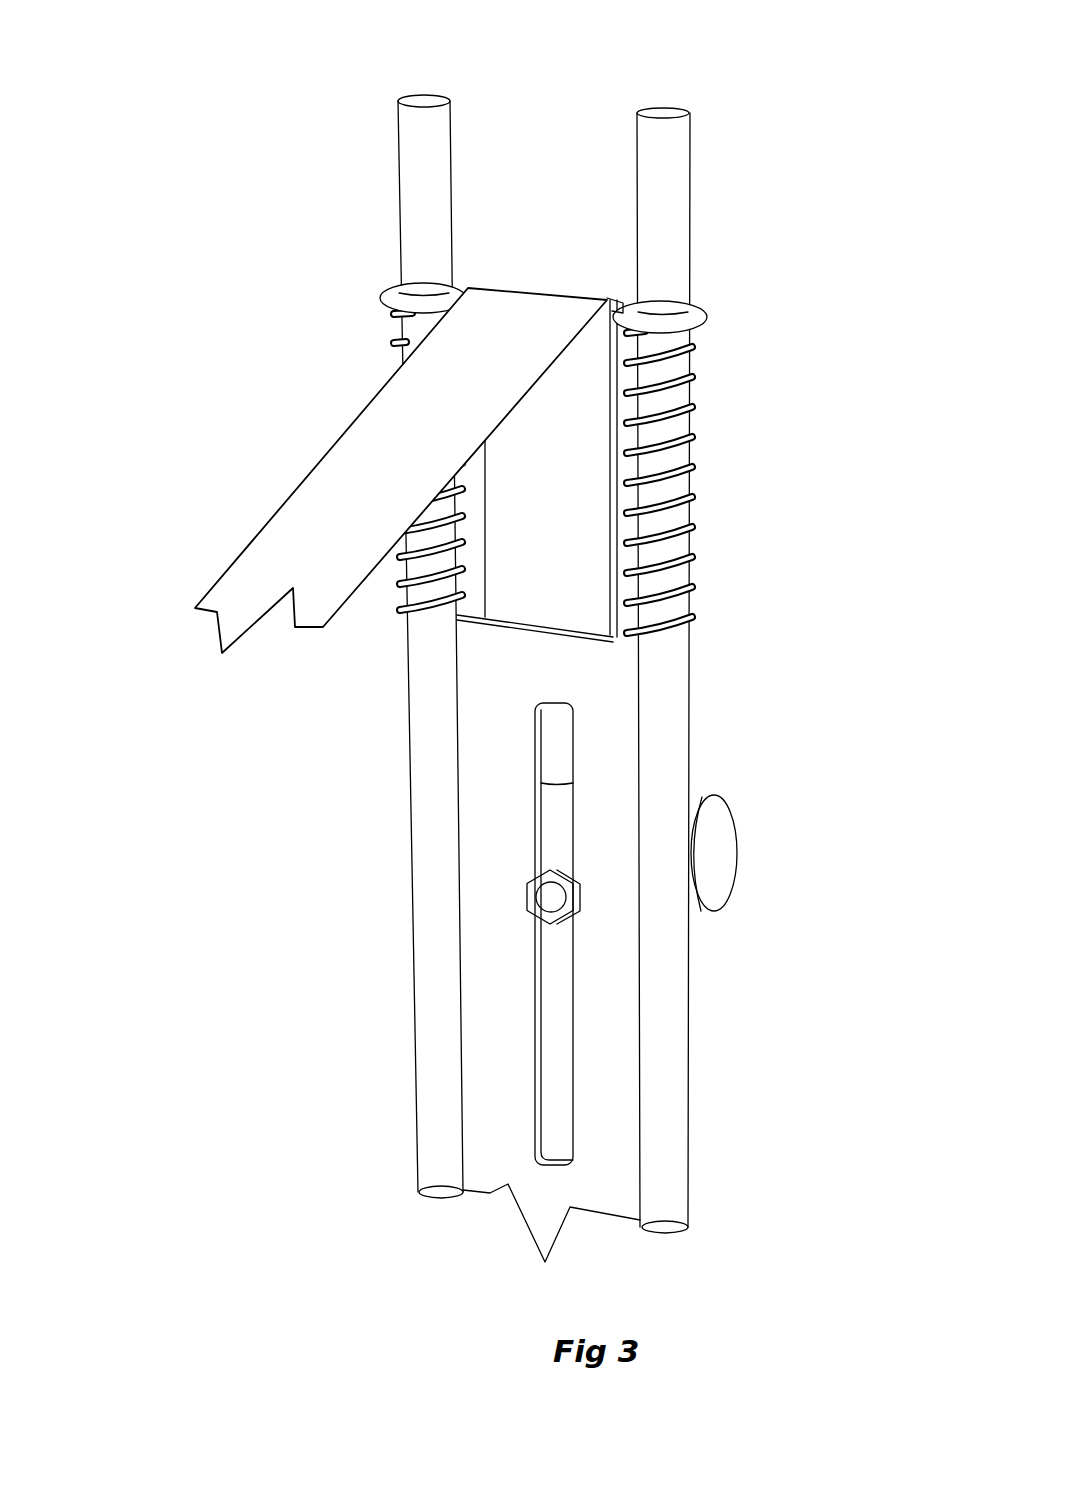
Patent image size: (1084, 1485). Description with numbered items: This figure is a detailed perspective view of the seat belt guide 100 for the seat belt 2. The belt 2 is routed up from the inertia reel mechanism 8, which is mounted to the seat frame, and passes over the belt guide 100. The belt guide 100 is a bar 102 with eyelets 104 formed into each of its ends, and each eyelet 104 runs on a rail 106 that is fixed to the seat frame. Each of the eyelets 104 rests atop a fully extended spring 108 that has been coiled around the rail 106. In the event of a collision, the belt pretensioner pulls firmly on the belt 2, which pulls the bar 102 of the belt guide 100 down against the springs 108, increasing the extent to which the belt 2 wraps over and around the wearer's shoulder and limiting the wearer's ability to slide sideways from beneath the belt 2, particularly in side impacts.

The seat belt 2 is at (245, 563).
The inertia reel mechanism 8 is at (713, 882).
The belt guide 100 is at (503, 232).
The bar 102 is at (607, 310).
The eyelets 104 is at (382, 299).
The rail 106 is at (413, 112).
The spring 108 is at (710, 446).